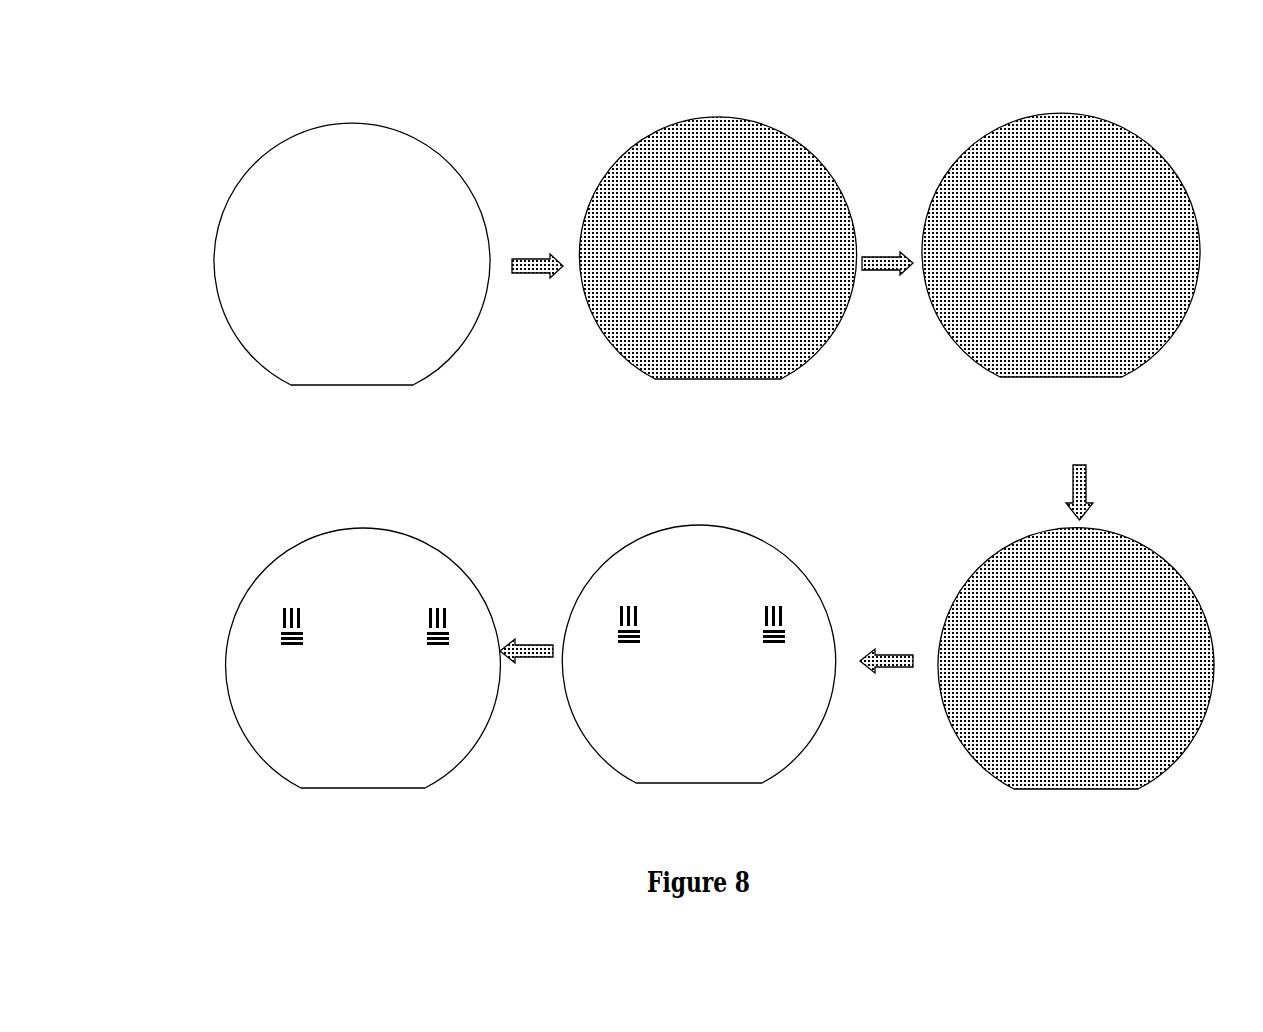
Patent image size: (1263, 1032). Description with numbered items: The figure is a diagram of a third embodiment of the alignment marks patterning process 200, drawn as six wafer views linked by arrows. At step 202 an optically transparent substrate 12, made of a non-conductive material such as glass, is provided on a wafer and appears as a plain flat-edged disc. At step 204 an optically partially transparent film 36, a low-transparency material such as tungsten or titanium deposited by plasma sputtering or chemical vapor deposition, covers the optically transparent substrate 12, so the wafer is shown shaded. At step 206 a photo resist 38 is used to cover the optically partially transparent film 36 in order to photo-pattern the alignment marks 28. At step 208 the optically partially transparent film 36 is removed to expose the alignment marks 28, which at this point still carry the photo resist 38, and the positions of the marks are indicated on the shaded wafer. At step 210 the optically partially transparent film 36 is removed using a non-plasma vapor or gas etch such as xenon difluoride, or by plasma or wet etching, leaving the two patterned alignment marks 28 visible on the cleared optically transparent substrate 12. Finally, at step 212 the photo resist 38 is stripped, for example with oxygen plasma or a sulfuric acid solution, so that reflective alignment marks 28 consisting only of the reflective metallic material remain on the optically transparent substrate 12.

The alignment marks patterning process 200 is at (220, 82).
The optically transparent substrate 12 is at (706, 468).
The optically partially transparent film 36 is at (635, 180).
The photo resist 38 is at (990, 158).
The alignment marks 28 is at (998, 613).
The step of providing substrate 202 is at (370, 438).
The step of depositing film 204 is at (707, 270).
The step of photo patterning 206 is at (1055, 270).
The step of exposing alignment marks 208 is at (1107, 835).
The step of removing film 210 is at (725, 835).
The step of removing photo resist 212 is at (400, 836).